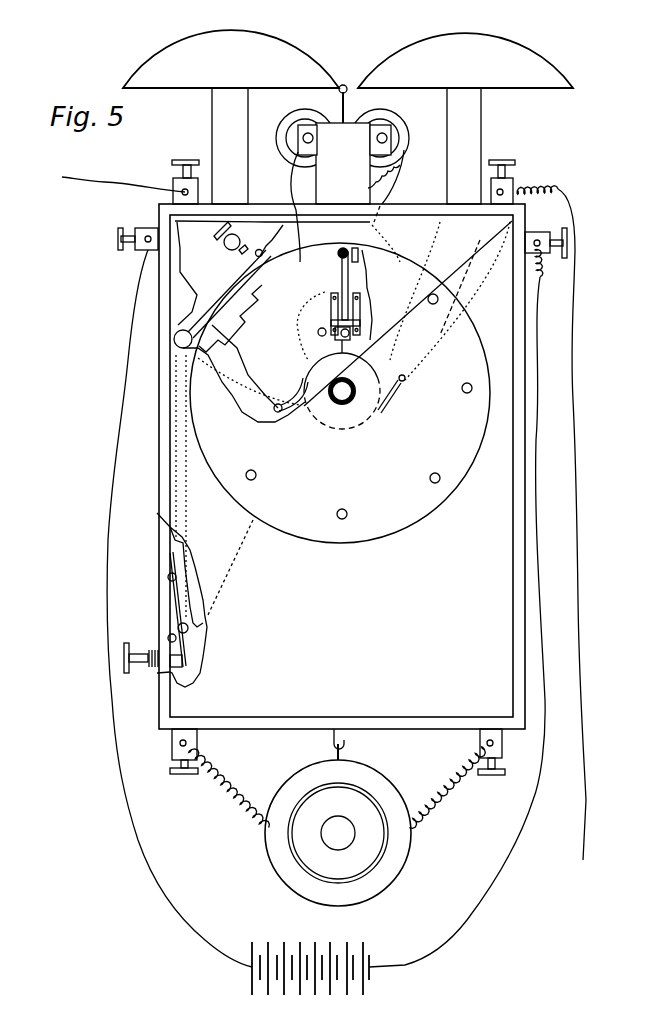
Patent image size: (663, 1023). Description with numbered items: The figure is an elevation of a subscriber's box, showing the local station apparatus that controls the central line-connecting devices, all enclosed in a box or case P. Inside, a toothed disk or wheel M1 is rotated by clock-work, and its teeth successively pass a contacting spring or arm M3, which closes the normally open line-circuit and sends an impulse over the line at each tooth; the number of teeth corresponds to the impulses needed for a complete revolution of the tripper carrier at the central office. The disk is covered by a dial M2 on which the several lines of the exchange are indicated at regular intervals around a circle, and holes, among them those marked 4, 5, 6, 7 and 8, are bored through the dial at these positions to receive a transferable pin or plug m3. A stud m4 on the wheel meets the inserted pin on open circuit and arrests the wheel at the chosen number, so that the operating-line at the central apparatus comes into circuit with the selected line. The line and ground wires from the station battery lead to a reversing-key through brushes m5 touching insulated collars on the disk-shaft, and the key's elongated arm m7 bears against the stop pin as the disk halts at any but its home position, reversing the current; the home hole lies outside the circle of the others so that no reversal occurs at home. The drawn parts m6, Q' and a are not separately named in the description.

The box or case P is at (342, 466).
The toothed disk or wheel M1 is at (334, 454).
The dial M2 is at (340, 393).
The contacting spring or arm M3 is at (222, 287).
The transferable pin or plug m3 is at (351, 273).
The stud m4 is at (358, 258).
The brushes m5 is at (291, 394).
The catch m6 is at (394, 394).
The elongated arm m7 is at (338, 280).
The contact Q' is at (253, 247).
The adjusting screw a is at (141, 646).
The disc hole 4 is at (244, 476).
The disc hole 5 is at (347, 515).
The disc hole 6 is at (440, 479).
The disc hole 7 is at (472, 389).
The disc hole 8 is at (438, 300).